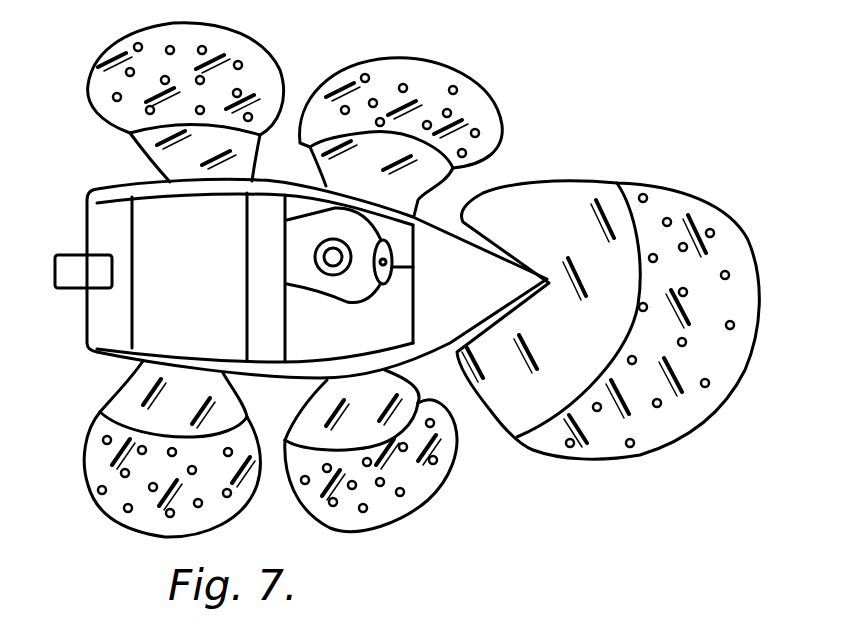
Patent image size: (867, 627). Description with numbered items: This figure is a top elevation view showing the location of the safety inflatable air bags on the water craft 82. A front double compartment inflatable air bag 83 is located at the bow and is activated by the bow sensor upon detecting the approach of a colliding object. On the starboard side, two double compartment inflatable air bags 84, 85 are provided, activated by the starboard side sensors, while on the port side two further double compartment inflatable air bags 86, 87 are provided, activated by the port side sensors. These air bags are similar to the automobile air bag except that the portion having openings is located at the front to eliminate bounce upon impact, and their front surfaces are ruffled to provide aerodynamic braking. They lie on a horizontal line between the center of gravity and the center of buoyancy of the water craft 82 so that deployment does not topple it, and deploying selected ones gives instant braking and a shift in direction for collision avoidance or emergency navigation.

The water craft 82 is at (113, 347).
The front double compartment inflatable air bag 83 is at (617, 183).
The double compartment inflatable air bag 84 is at (455, 440).
The double compartment inflatable air bag 85 is at (103, 415).
The double compartment inflatable air bag 86 is at (343, 72).
The double compartment inflatable air bag 87 is at (134, 139).